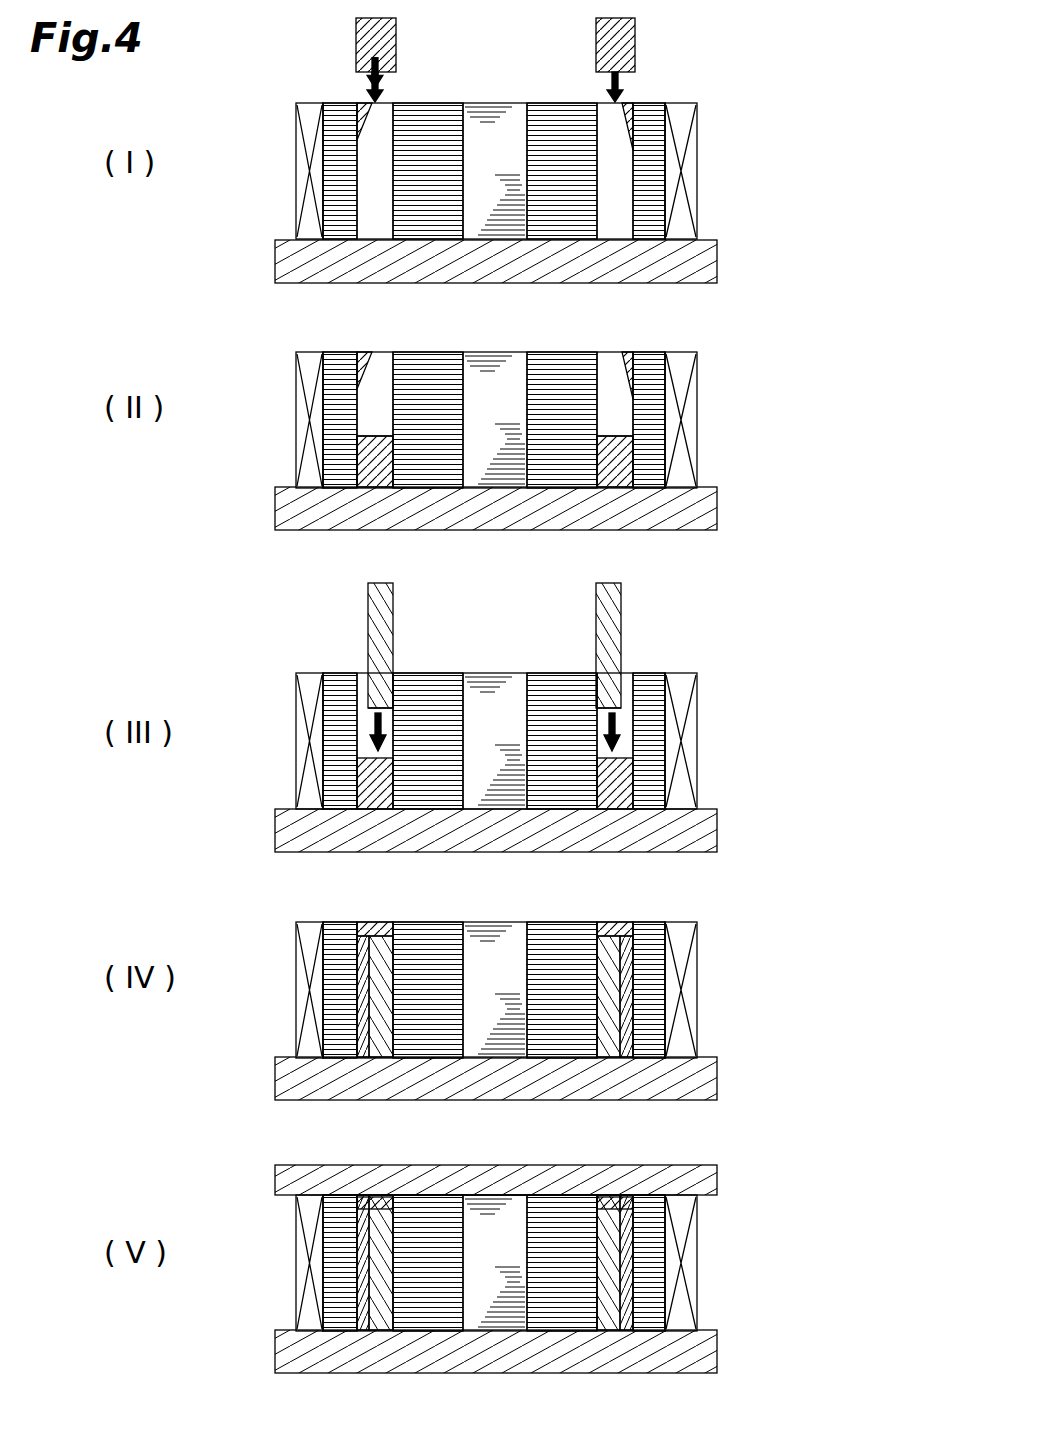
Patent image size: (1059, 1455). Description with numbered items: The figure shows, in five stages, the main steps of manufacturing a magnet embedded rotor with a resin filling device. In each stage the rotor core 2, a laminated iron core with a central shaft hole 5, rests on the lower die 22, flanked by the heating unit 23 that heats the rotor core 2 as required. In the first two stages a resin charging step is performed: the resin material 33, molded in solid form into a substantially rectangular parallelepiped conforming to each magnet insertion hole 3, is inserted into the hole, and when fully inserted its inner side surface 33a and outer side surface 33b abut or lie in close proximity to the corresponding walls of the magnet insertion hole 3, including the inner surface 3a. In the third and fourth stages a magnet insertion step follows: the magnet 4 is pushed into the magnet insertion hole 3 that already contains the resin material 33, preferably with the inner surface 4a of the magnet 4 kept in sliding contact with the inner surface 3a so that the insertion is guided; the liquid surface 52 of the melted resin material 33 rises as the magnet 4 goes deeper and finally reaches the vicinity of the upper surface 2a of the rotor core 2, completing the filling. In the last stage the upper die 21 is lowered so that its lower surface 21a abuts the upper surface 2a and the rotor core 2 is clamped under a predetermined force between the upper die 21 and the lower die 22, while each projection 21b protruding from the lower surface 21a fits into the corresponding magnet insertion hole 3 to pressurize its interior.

The rotor core 2 is at (500, 102).
The upper surface of the rotor core 2a is at (425, 1195).
The magnet insertion hole 3 is at (368, 125).
The inner surface of the magnet insertion hole 3a is at (393, 672).
The magnet 4 is at (388, 584).
The inner surface of the magnet 4a is at (394, 593).
The shaft hole 5 is at (477, 128).
The upper die 21 is at (716, 1165).
The lower surface of the upper die 21a is at (633, 1262).
The projection 21b is at (378, 1207).
The lower die 22 is at (717, 260).
The heating unit 23 is at (296, 157).
The resin material 33 is at (393, 17).
The inner side surface of the resin material 33a is at (375, 436).
The outer side surface of the resin material 33b is at (357, 462).
The liquid surface 52 is at (367, 922).